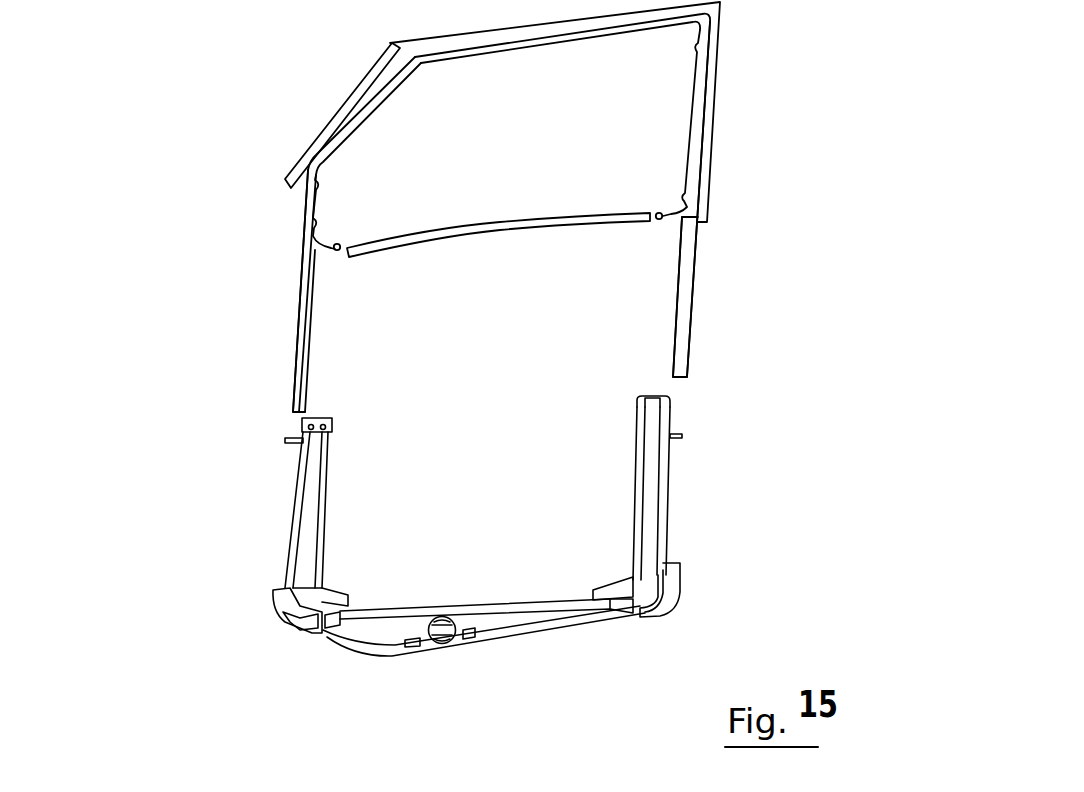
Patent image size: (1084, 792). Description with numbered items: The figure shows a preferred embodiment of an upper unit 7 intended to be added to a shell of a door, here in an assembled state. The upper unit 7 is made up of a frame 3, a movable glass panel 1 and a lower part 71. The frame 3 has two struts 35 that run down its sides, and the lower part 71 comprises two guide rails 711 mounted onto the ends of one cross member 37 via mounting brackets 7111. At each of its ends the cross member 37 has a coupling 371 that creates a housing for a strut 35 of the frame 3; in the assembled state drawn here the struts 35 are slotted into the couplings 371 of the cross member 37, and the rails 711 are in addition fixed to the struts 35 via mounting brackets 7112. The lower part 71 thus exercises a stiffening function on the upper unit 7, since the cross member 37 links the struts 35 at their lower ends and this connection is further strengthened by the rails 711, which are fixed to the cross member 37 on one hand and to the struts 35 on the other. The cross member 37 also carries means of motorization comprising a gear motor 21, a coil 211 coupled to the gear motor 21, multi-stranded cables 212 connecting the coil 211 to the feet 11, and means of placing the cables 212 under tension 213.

The movable glass panel 1 is at (640, 112).
The frame 3 is at (333, 110).
The upper unit 7 is at (123, 665).
The feet 11 is at (313, 420).
The gear motor 21 is at (425, 620).
The strut 35 is at (300, 292).
The cross member 37 is at (522, 599).
The lower part 71 is at (803, 385).
The coil 211 is at (463, 627).
The multi-stranded cables 212 is at (368, 650).
The means of placing the cables under tension 213 is at (463, 640).
The coupling 371 is at (280, 620).
The guide rail 711 is at (330, 483).
The mounting bracket 7111 is at (332, 597).
The mounting bracket 7112 is at (290, 433).